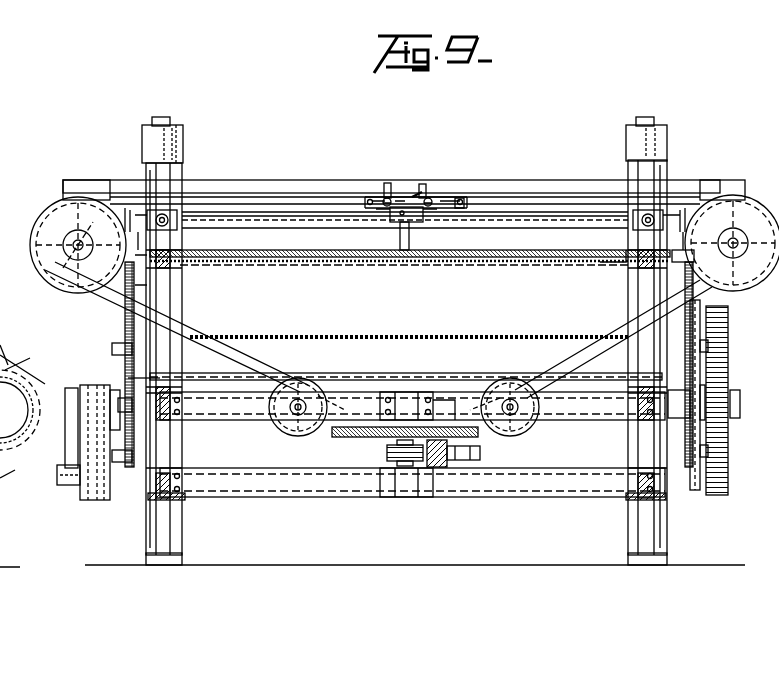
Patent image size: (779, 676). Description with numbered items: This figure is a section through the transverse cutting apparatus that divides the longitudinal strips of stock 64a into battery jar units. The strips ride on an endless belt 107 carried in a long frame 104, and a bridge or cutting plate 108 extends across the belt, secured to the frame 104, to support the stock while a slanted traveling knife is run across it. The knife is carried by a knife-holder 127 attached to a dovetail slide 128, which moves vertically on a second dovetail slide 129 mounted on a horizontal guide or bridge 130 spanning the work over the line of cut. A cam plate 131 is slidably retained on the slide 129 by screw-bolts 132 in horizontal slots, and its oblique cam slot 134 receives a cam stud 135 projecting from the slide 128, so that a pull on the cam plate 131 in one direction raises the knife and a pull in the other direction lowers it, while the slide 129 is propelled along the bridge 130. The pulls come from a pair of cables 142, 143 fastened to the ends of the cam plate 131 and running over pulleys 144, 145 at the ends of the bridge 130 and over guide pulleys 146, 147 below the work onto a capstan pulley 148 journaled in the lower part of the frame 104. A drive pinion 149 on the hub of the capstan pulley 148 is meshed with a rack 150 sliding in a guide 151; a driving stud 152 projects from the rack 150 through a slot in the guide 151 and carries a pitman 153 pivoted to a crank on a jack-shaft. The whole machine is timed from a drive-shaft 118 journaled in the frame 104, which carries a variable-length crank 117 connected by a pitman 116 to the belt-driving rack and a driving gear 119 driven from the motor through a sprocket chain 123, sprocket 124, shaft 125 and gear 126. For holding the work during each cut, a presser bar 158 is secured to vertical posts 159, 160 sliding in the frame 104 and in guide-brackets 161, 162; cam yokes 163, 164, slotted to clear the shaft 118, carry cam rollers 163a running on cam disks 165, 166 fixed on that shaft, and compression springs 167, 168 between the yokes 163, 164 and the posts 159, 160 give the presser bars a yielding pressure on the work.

The longitudinal strips of stock 64a is at (560, 248).
The frame 104 is at (162, 310).
The endless belt 107 is at (303, 270).
The bridge or cutting plate 108 is at (618, 262).
The pitman 116 is at (68, 420).
The variable-length crank 117 is at (100, 507).
The drive-shaft 118 is at (116, 390).
The driving gear 119 is at (720, 496).
The sprocket chain 123 is at (5, 480).
The sprocket 124 is at (16, 378).
The shaft 125 is at (12, 422).
The gear 126 is at (15, 345).
The knife-holder 127 is at (402, 230).
The dovetail slide 128 is at (425, 218).
The second dovetail slide 129 is at (490, 197).
The horizontal guide or bridge 130 is at (532, 180).
The cam plate 131 is at (457, 196).
The screw-bolts 132 is at (385, 206).
The cam slot 134 is at (420, 192).
The cam stud 135 is at (412, 196).
The cable 142 is at (250, 174).
The cable 143 is at (560, 198).
The pulley 144 is at (52, 232).
The pulley 145 is at (747, 200).
The guide pulley 146 is at (302, 380).
The guide pulley 147 is at (508, 380).
The capstan pulley 148 is at (356, 438).
The drive pinion 149 is at (388, 453).
The rack 150 is at (450, 463).
The guide 151 is at (432, 467).
The driving stud 152 is at (480, 453).
The pitman 153 is at (447, 395).
The presser bar 158 is at (478, 263).
The vertical post 159 is at (168, 121).
The vertical post 160 is at (636, 122).
The guide-bracket 161 is at (152, 141).
The guide-bracket 162 is at (665, 137).
The cam yoke 163 is at (132, 451).
The cam rollers 163a is at (731, 329).
The cam yoke 164 is at (700, 368).
The cam disk 165 is at (130, 382).
The cam disk 166 is at (705, 397).
The compression spring 167 is at (152, 304).
The compression spring 168 is at (640, 312).